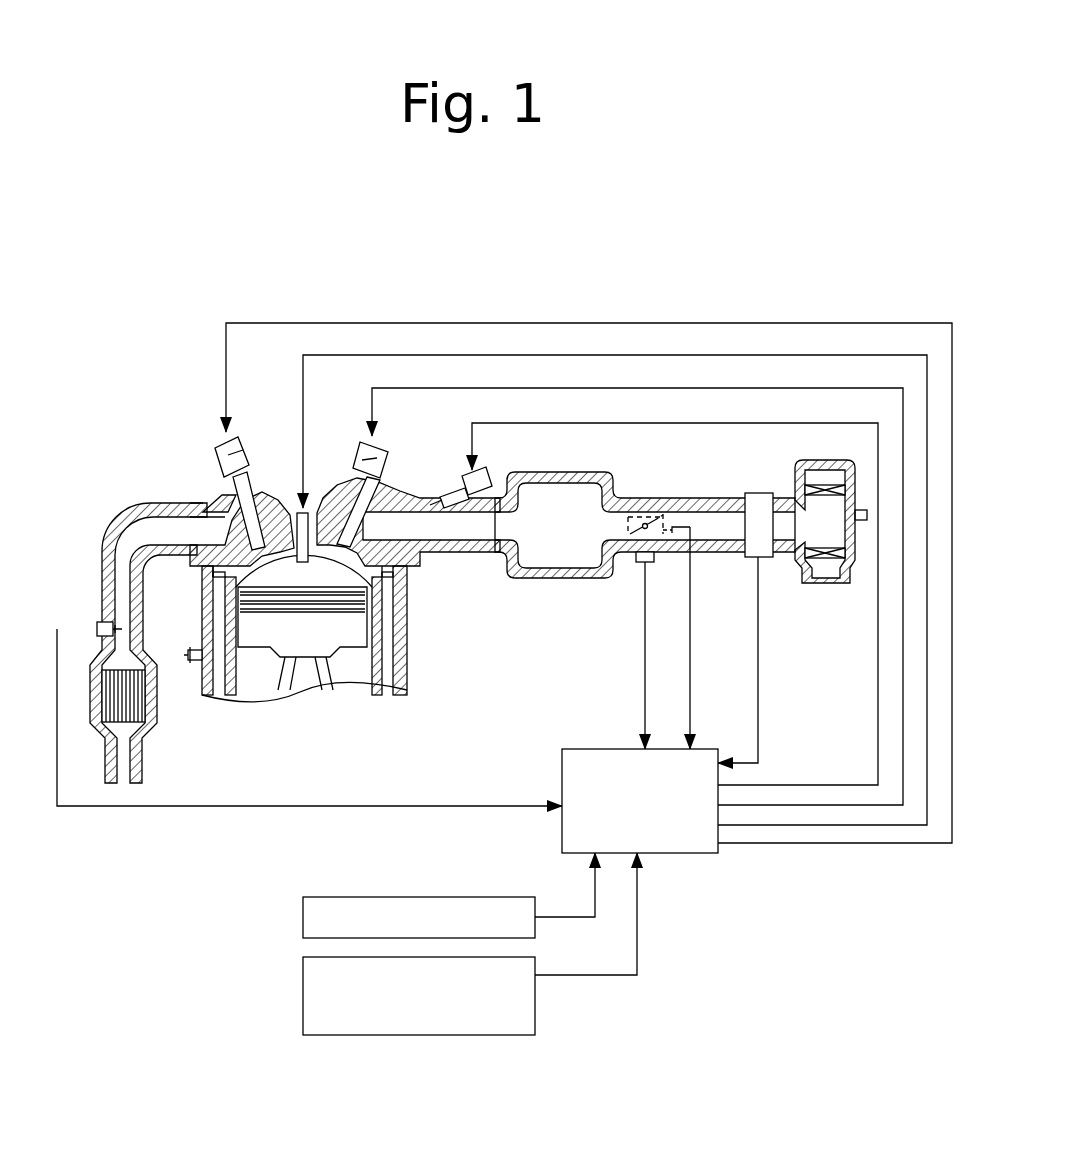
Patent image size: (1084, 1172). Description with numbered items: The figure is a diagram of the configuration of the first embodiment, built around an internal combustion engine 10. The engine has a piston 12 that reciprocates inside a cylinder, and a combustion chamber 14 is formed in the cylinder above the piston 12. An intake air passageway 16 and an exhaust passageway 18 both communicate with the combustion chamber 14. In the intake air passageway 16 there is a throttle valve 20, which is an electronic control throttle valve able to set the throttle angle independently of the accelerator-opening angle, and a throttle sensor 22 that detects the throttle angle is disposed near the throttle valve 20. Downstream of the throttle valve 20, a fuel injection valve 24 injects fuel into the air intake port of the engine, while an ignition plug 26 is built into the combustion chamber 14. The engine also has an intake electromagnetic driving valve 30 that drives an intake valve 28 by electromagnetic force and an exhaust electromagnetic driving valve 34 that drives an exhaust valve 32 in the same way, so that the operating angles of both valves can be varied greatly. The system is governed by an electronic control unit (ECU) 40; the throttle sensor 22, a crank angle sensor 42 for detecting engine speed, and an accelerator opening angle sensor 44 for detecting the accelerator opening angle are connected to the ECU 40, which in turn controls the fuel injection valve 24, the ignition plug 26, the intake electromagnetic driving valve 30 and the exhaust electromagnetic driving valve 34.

The internal combustion engine 10 is at (416, 656).
The piston 12 is at (355, 633).
The combustion chamber 14 is at (340, 571).
The intake air passageway 16 is at (616, 496).
The exhaust passageway 18 is at (108, 543).
The throttle valve 20 is at (646, 515).
The throttle sensor 22 is at (678, 548).
The fuel injection valve 24 is at (452, 490).
The ignition plug 26 is at (290, 512).
The intake valve 28 is at (335, 488).
The intake electromagnetic driving valve 30 is at (384, 446).
The exhaust valve 32 is at (208, 494).
The exhaust electromagnetic driving valve 34 is at (238, 440).
The electronic control unit (ECU) 40 is at (683, 855).
The crank angle sensor 42 is at (303, 920).
The accelerator opening angle sensor 44 is at (303, 977).